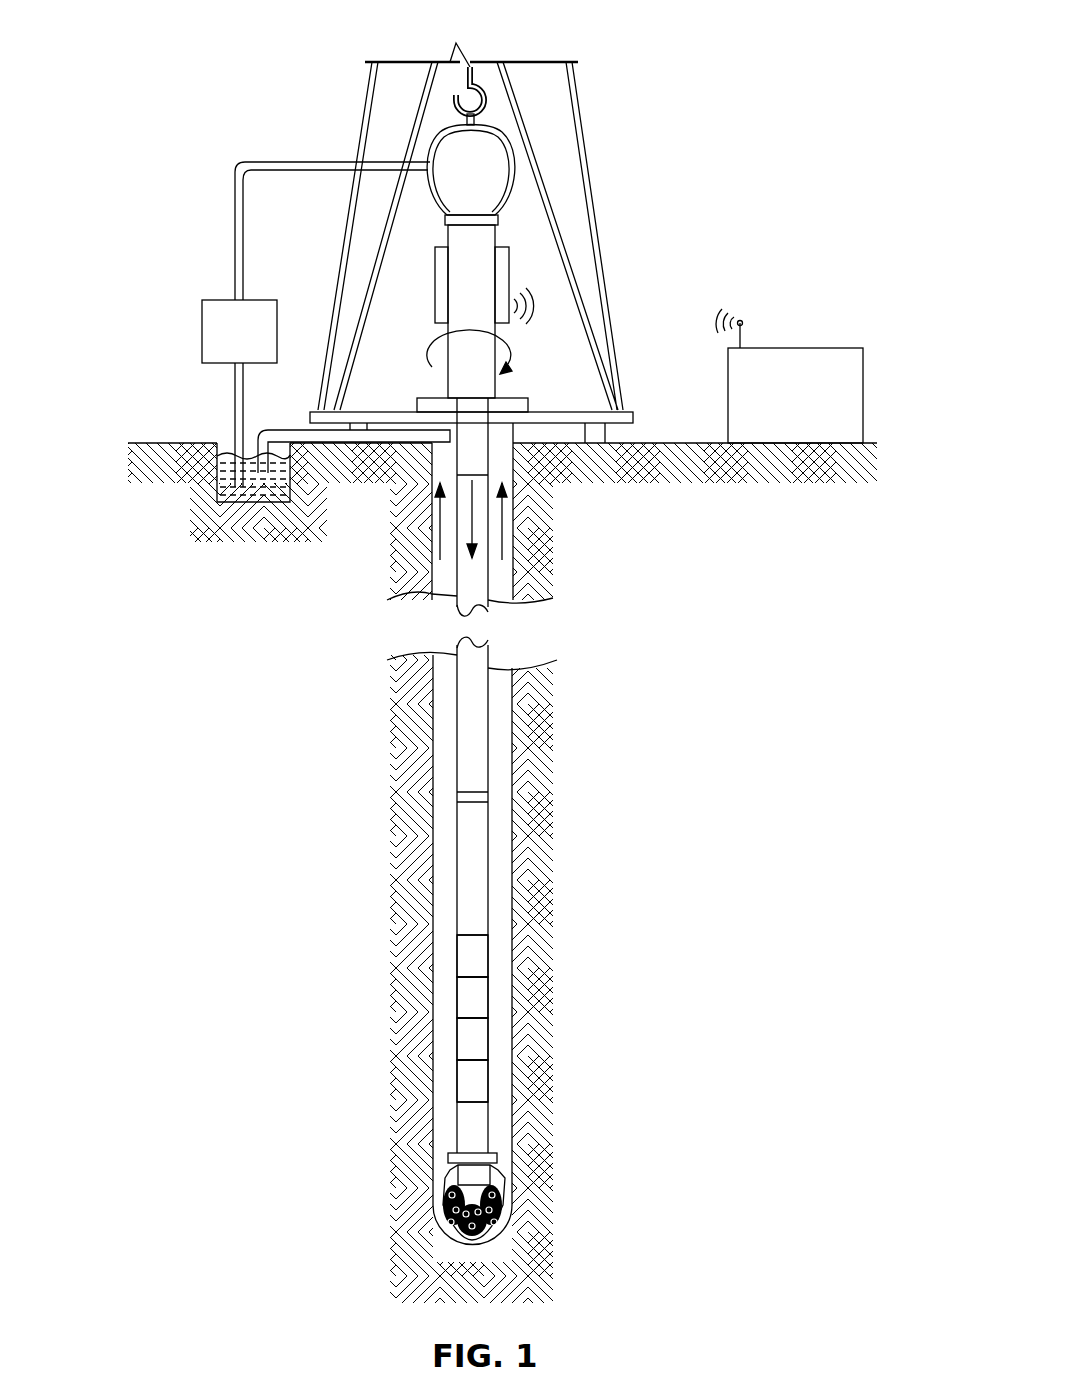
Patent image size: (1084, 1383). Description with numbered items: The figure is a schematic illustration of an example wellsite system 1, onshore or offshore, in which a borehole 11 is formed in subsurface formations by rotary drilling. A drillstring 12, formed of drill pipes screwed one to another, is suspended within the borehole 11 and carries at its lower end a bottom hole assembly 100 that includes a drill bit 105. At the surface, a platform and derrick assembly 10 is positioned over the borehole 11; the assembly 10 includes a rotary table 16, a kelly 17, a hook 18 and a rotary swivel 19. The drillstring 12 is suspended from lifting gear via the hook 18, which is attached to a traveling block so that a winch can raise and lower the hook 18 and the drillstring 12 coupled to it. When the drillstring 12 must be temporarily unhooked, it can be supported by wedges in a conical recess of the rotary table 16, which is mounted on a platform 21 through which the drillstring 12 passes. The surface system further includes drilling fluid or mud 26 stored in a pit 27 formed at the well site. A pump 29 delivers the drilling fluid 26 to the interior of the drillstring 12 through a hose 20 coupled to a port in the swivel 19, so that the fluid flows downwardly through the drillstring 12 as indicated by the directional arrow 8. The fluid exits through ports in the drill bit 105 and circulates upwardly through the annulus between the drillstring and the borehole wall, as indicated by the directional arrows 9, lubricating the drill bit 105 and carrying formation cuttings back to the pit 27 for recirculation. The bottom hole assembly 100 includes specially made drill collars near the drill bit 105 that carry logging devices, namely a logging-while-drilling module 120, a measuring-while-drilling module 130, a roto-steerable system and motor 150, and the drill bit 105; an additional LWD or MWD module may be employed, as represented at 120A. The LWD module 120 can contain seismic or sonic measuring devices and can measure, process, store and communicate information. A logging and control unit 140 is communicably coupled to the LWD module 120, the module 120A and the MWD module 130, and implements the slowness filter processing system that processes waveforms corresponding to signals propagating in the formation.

The wellsite system 1 is at (253, 32).
The platform and derrick assembly 10 is at (610, 138).
The hook 18 is at (495, 103).
The rotary swivel 19 is at (468, 165).
The kelly 17 is at (460, 320).
The rotary table 16 is at (437, 398).
The platform 21 is at (633, 418).
The borehole 11 is at (504, 455).
The drillstring 12 is at (458, 436).
The directional arrows 9 is at (440, 500).
The directional arrow 8 is at (470, 527).
The hose 20 is at (268, 162).
The pump 29 is at (222, 300).
The pit 27 is at (224, 447).
The drilling fluid or mud 26 is at (255, 495).
The logging and control unit 140 is at (795, 348).
The bottom hole assembly 100 is at (383, 935).
The logging-while-drilling (LWD) module 120 is at (490, 998).
The measuring-while-drilling (MWD) module 130 is at (490, 1040).
The LWD and/or MWD module 120A is at (490, 1082).
The roto-steerable system and motor 150 is at (490, 1122).
The drill bit 105 is at (503, 1198).